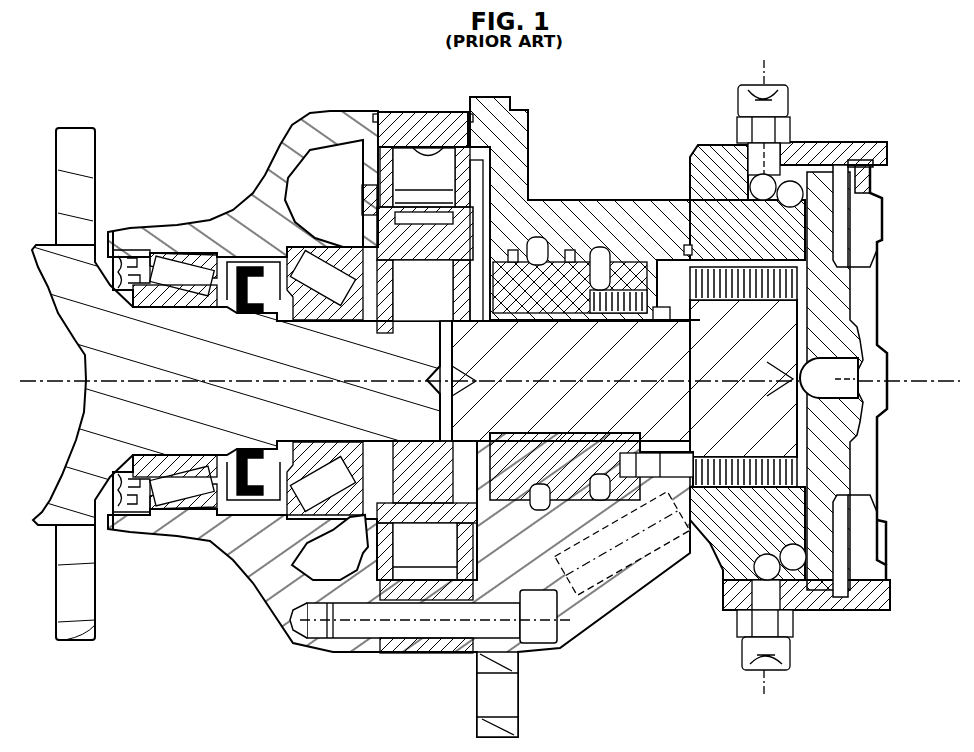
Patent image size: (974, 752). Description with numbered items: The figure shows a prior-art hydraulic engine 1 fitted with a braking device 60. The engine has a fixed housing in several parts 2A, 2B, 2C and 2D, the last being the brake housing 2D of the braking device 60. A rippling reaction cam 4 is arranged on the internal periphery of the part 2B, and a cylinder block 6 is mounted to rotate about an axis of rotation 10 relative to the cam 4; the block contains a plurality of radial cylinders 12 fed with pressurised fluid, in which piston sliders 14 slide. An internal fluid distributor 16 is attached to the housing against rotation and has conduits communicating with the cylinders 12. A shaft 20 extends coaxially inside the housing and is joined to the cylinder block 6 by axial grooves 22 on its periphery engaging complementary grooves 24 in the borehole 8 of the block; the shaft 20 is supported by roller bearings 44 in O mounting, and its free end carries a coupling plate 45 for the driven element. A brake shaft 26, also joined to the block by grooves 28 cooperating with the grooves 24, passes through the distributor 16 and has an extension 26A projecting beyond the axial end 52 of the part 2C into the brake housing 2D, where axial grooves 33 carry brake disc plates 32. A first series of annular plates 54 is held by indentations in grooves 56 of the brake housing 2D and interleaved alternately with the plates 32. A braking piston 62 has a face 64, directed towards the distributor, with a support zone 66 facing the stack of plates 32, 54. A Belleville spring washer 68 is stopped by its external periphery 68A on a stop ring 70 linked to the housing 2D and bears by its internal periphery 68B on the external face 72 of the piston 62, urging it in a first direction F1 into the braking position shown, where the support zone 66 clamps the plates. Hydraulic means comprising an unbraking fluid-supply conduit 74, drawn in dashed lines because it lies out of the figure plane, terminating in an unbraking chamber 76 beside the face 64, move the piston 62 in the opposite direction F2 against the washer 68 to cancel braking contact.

The hydraulic engine 1 is at (524, 93).
The housing part 2A is at (320, 130).
The housing part 2B is at (397, 112).
The housing part 2C is at (527, 150).
The brake housing 2D is at (723, 170).
The rippling reaction cam 4 is at (440, 143).
The cylinder block 6 is at (403, 327).
The borehole 8 is at (442, 321).
The axis of rotation 10 is at (27, 380).
The radial cylinders 12 is at (377, 223).
The piston sliders 14 is at (425, 233).
The internal fluid distributor 16 is at (530, 450).
The shaft 20 is at (133, 403).
The axial grooves 22 is at (367, 328).
The complementary grooves 24 is at (405, 433).
The brake shaft 26 is at (622, 408).
The extension 26A is at (775, 401).
The grooves 28 is at (492, 321).
The brake disc plates 32 is at (717, 320).
The axial grooves 33 is at (743, 402).
The roller bearings 44 is at (190, 293).
The wheel flange 45 is at (90, 200).
The axial end 52 is at (715, 205).
The annular brake plates 54 is at (737, 263).
The grooves 56 is at (688, 250).
The braking device 60 is at (818, 112).
The braking piston 62 is at (837, 293).
The face 64 is at (762, 200).
The support zone 66 is at (795, 236).
The spring washer 68 is at (852, 223).
The external periphery 68A is at (863, 147).
The internal periphery 68B is at (850, 253).
The stop ring 70 is at (877, 180).
The external face 72 is at (850, 315).
The unbraking fluid-supply conduit 74 is at (717, 572).
The unbraking chamber 76 is at (860, 532).
The first direction F1 is at (812, 432).
The opposite direction F2 is at (948, 432).